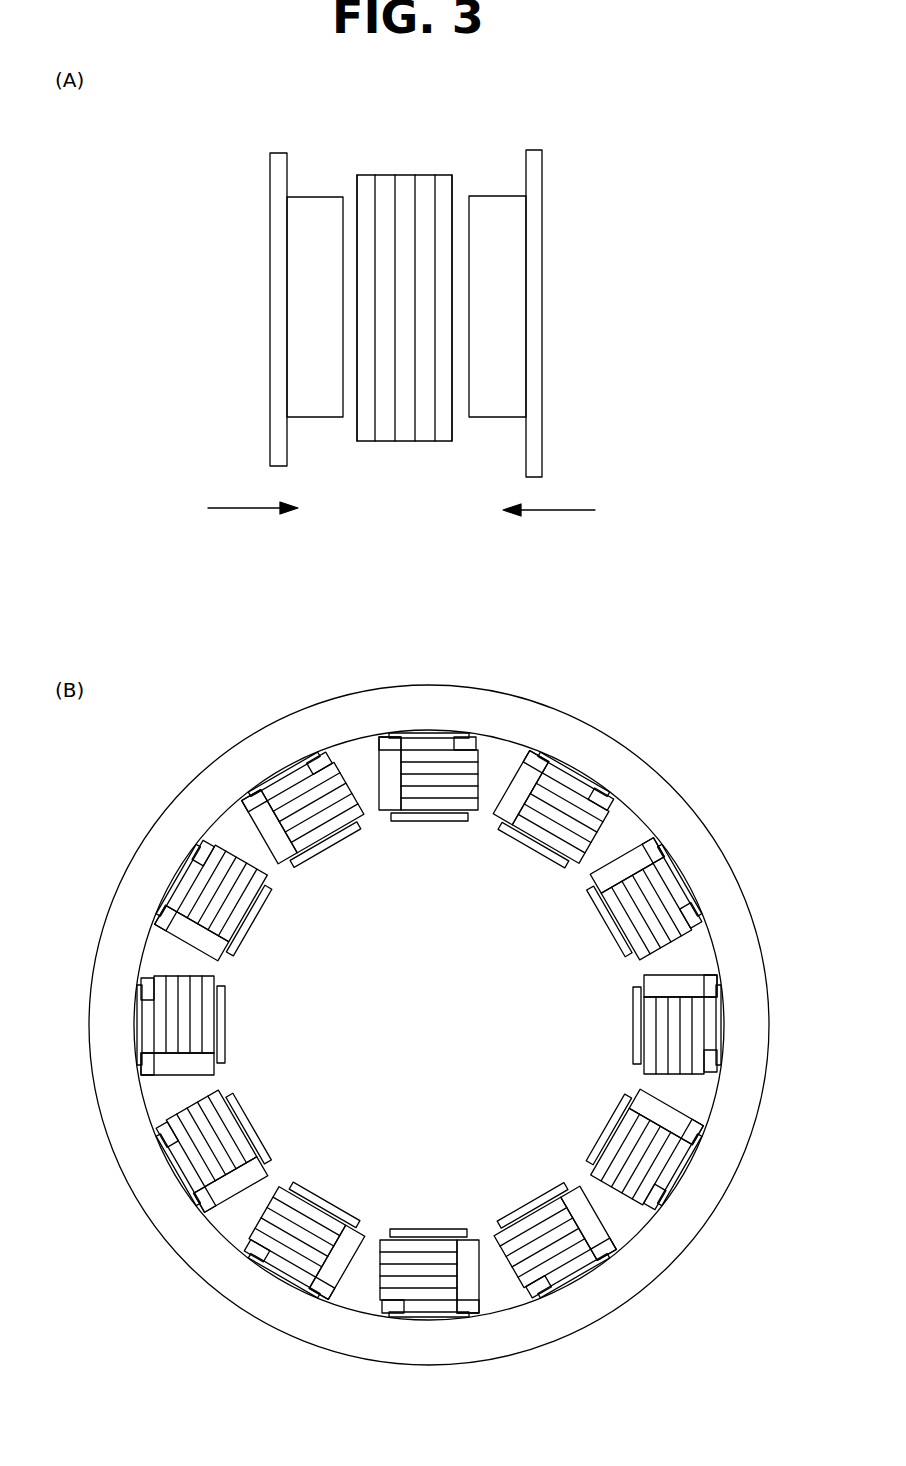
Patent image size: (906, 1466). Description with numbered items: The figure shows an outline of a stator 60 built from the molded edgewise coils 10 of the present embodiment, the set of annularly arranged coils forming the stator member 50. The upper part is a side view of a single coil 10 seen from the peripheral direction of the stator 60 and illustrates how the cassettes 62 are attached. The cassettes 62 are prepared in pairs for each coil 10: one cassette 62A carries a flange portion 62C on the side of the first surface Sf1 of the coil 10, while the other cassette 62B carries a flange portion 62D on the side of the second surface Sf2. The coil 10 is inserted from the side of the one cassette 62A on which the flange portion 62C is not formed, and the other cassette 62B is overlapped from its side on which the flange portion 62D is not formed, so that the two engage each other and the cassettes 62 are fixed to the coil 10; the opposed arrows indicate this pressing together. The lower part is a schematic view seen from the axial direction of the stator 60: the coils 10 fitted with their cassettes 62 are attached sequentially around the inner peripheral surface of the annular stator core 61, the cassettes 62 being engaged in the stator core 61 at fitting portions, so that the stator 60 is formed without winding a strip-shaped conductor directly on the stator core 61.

The coil 10 is at (420, 175).
The stator member 50 is at (542, 998).
The stator 60 is at (429, 996).
The stator core 61 is at (475, 698).
The cassette 62 is at (443, 508).
The one cassette 62A is at (325, 196).
The other cassette 62B is at (490, 195).
The flange portion 62C is at (271, 177).
The flange portion 62D is at (543, 178).
The first surface Sf1 is at (358, 183).
The second surface Sf2 is at (453, 195).